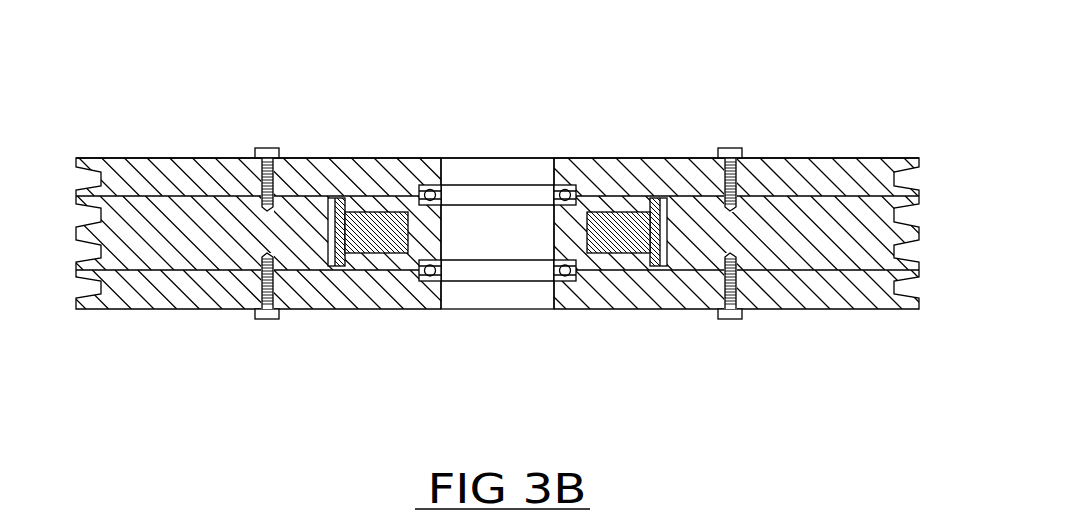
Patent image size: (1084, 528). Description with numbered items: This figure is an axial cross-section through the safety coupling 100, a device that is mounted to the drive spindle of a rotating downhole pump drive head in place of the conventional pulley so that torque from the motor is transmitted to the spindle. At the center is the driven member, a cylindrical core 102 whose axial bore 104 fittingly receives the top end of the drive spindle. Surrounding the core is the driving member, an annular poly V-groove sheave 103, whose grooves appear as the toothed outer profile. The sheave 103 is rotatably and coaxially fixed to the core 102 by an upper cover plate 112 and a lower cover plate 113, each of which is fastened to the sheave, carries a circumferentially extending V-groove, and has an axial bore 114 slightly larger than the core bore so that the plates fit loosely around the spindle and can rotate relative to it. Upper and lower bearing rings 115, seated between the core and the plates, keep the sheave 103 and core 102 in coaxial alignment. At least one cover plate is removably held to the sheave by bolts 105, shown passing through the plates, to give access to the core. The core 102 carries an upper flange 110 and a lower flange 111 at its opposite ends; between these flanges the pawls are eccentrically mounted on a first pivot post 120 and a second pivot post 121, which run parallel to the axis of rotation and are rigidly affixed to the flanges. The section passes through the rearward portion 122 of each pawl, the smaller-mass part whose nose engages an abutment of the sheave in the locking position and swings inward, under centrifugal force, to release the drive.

The safety coupling 100 is at (662, 80).
The cylindrical core 102 is at (618, 174).
The annular poly V-groove sheave 103 is at (205, 245).
The axial bore 104 is at (548, 224).
The bolts 105 is at (265, 148).
The upper flange 110 is at (363, 186).
The lower flange 111 is at (385, 256).
The upper cover plate 112 is at (148, 175).
The lower cover plate 113 is at (130, 309).
The axial bore of the cover plates 114 is at (443, 184).
The bearing rings 115 is at (421, 190).
The first pivot post 120 is at (335, 270).
The second pivot post 121 is at (663, 268).
The rearward portion 122 is at (397, 240).